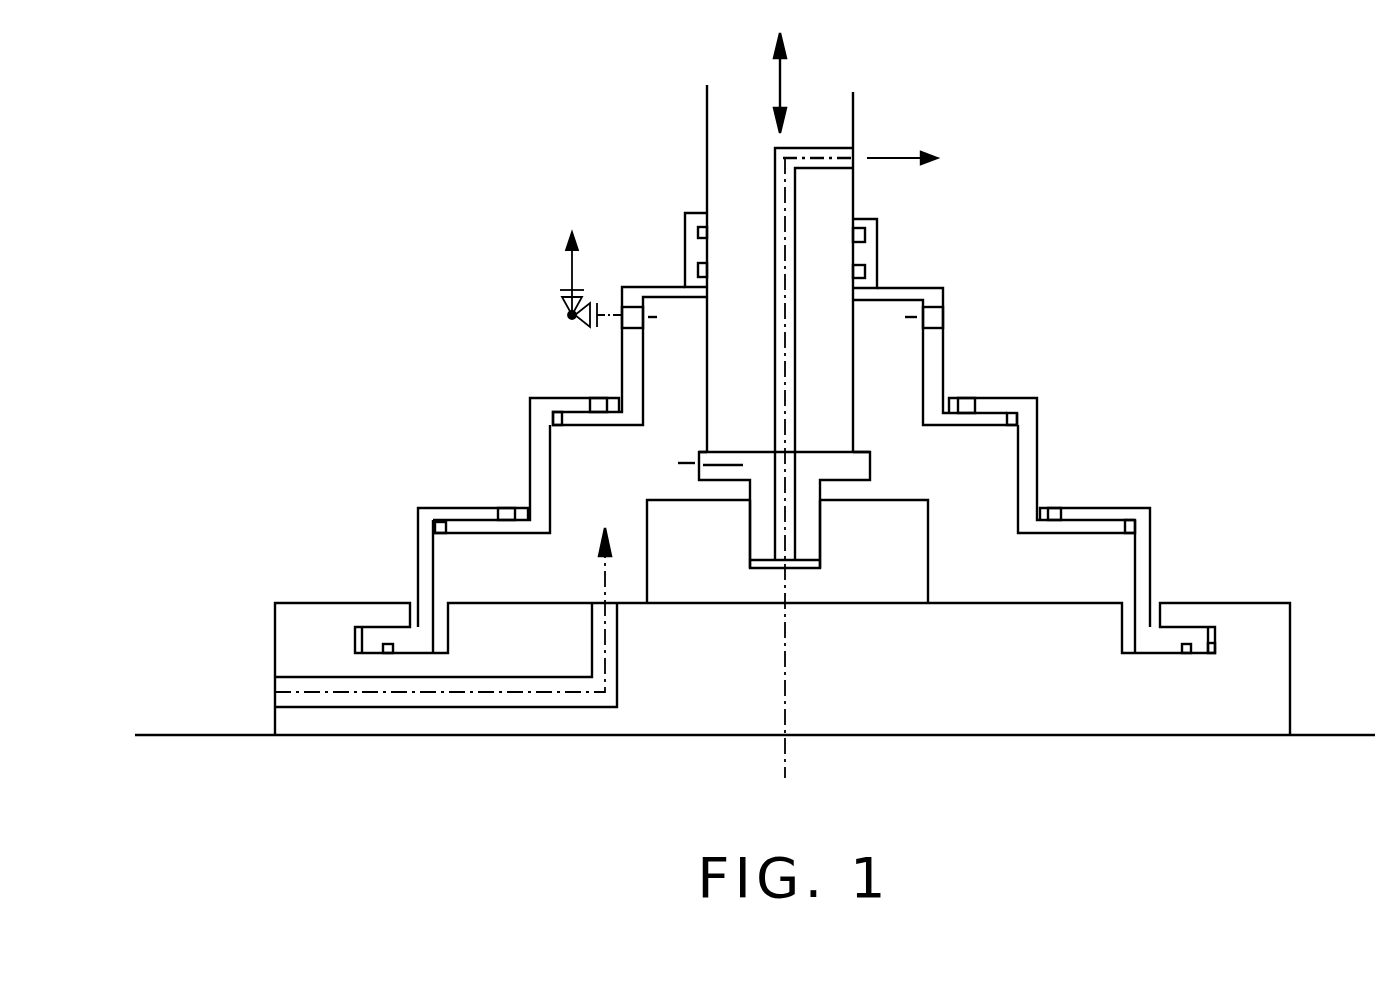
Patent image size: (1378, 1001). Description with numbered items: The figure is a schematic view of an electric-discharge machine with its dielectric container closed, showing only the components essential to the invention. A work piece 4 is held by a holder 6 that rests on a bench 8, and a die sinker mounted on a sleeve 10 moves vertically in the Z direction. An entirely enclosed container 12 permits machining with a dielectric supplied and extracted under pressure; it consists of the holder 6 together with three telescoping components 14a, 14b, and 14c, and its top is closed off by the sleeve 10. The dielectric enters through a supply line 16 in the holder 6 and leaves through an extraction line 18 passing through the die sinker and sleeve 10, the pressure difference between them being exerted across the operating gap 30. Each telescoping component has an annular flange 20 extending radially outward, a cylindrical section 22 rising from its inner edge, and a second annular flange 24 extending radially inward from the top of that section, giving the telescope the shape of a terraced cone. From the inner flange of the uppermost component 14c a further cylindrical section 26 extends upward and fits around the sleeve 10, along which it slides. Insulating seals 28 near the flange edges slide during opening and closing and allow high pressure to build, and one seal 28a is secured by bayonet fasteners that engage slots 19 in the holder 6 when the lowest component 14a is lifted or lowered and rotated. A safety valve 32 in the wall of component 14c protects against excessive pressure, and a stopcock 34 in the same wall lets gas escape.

The work piece 4 is at (705, 578).
The holder 6 is at (1272, 652).
The bench 8 is at (1010, 762).
The sleeve 10 is at (837, 125).
The container 12 is at (512, 360).
The lowest and outermost telescoping component 14a is at (424, 547).
The telescoping component 14b is at (532, 410).
The uppermost and innermost telescoping component 14c is at (643, 272).
The supply line 16 is at (275, 692).
The extraction line 18 is at (775, 165).
The slots 19 is at (1210, 655).
The annular flange 20 is at (572, 408).
The cylindrical section 22 is at (935, 356).
The annular flange 24 is at (905, 292).
The second cylindrical section 26 is at (873, 228).
The insulating seals 28 is at (878, 235).
The seal 28a is at (1187, 645).
The operating gap 30 is at (824, 578).
The safety valve 32 is at (570, 313).
The stopcock 34 is at (943, 317).